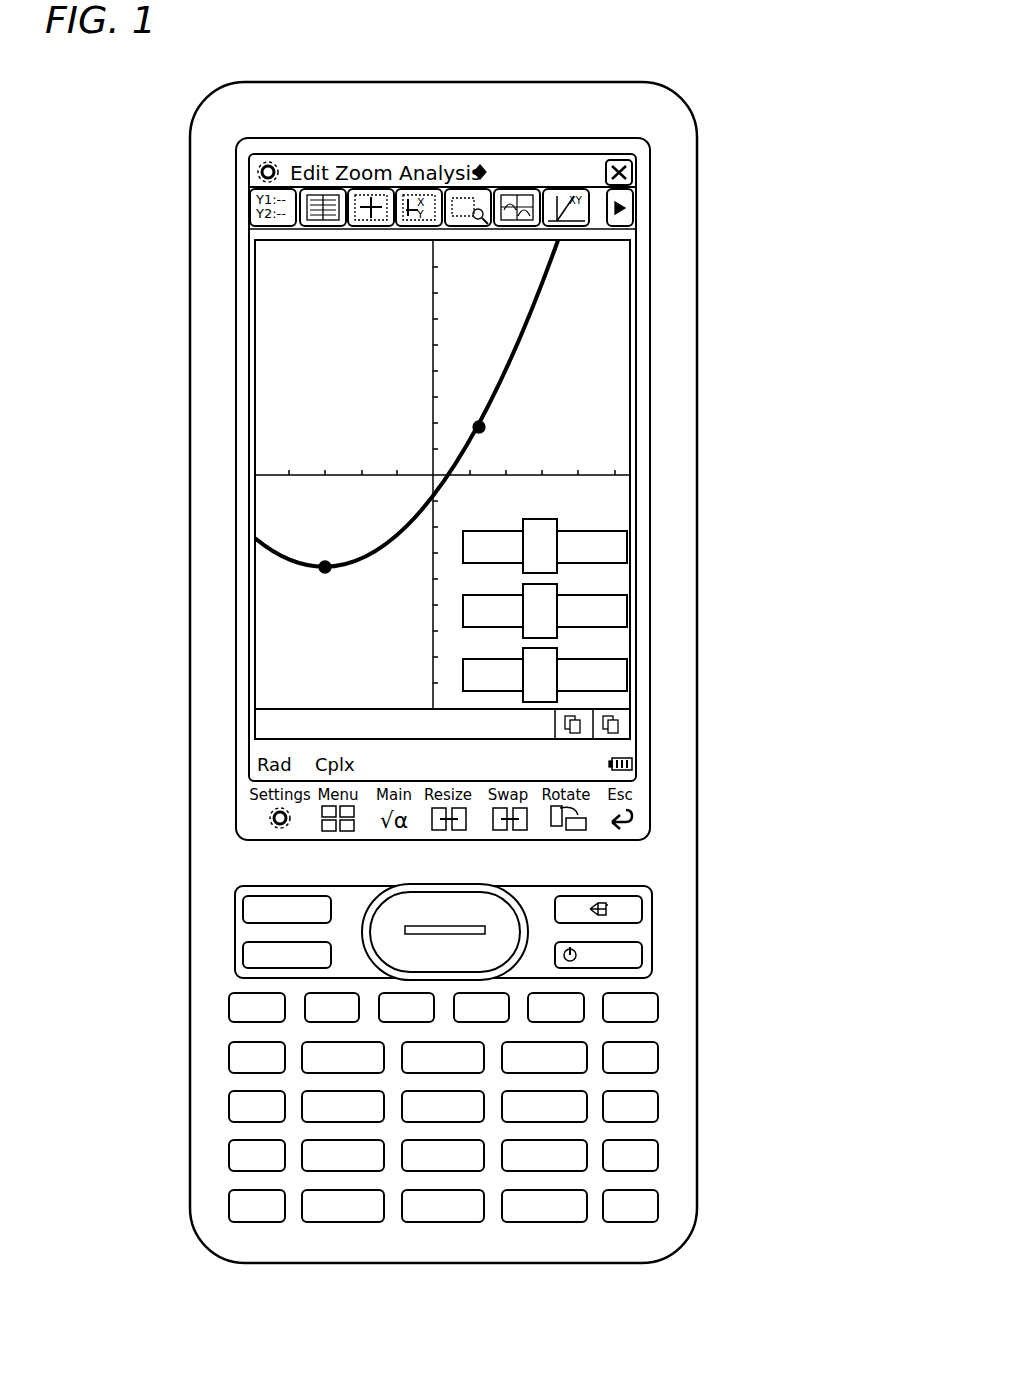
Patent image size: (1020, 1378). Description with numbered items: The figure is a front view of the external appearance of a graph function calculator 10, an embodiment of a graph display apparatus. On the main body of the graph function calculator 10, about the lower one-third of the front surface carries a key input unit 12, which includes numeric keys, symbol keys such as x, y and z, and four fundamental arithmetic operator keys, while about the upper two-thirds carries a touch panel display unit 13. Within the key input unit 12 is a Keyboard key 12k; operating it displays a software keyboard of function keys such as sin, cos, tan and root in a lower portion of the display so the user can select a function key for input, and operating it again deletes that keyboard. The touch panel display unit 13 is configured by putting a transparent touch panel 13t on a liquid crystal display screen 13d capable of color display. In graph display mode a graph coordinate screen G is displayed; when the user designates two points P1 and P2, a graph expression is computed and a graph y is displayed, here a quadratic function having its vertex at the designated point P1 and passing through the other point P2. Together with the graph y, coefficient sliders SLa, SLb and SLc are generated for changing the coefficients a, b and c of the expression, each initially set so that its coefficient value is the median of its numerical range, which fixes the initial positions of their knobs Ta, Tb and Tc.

The graph function calculator 10 is at (698, 178).
The key input unit 12 is at (431, 1053).
The Keyboard key 12k is at (243, 912).
The touch panel display unit 13 is at (519, 489).
The liquid crystal display screen 13d is at (633, 377).
The touch panel 13t is at (628, 410).
The graph coordinate screen G is at (493, 474).
The graph y is at (535, 312).
The designated point P1 is at (325, 575).
The designated point P2 is at (487, 427).
The knob Ta is at (548, 530).
The coefficient slider SLa is at (612, 550).
The knob Tb is at (548, 590).
The coefficient slider SLb is at (612, 612).
The knob Tc is at (548, 655).
The coefficient slider SLc is at (612, 683).